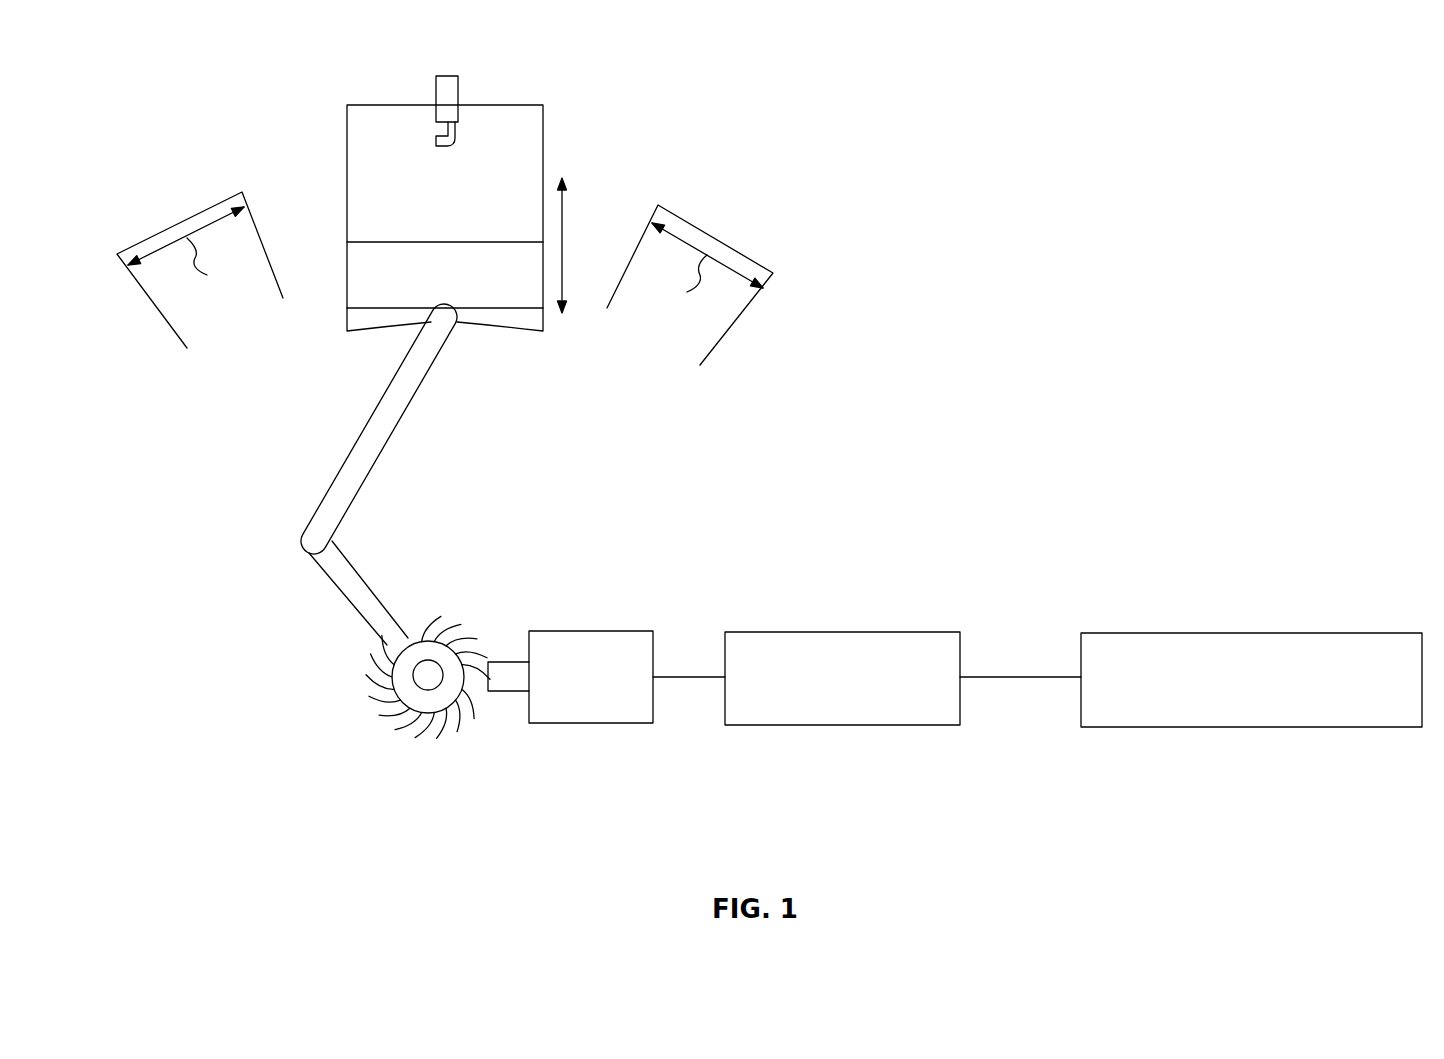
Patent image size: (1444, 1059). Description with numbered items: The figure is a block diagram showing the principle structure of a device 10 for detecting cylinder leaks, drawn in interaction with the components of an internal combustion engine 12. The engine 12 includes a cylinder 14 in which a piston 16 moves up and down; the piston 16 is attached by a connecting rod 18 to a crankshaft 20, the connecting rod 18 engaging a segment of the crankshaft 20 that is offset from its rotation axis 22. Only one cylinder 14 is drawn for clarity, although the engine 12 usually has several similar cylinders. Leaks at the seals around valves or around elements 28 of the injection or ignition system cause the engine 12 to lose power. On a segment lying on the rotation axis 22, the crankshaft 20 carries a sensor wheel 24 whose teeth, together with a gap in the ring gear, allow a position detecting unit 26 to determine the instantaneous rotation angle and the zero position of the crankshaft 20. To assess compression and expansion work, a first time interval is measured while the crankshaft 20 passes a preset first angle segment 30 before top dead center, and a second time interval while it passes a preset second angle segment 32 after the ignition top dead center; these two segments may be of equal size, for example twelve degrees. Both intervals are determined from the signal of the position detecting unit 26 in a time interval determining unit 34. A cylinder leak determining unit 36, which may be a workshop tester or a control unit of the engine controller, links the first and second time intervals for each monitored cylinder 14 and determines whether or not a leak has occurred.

The device 10 is at (870, 87).
The internal combustion engine 12 is at (300, 207).
The cylinder 14 is at (528, 147).
The piston 16 is at (485, 297).
The connecting rod 18 is at (378, 435).
The crankshaft 20 is at (353, 598).
The rotation axis 22 is at (428, 677).
The sensor wheel 24 is at (362, 718).
The position detecting unit 26 is at (590, 702).
The element of an injection or ignition system 28 is at (447, 82).
The first angle segment 30 is at (233, 175).
The second angle segment 32 is at (664, 190).
The time interval determining unit 34 is at (843, 703).
The cylinder leak determining unit 36 is at (1243, 706).